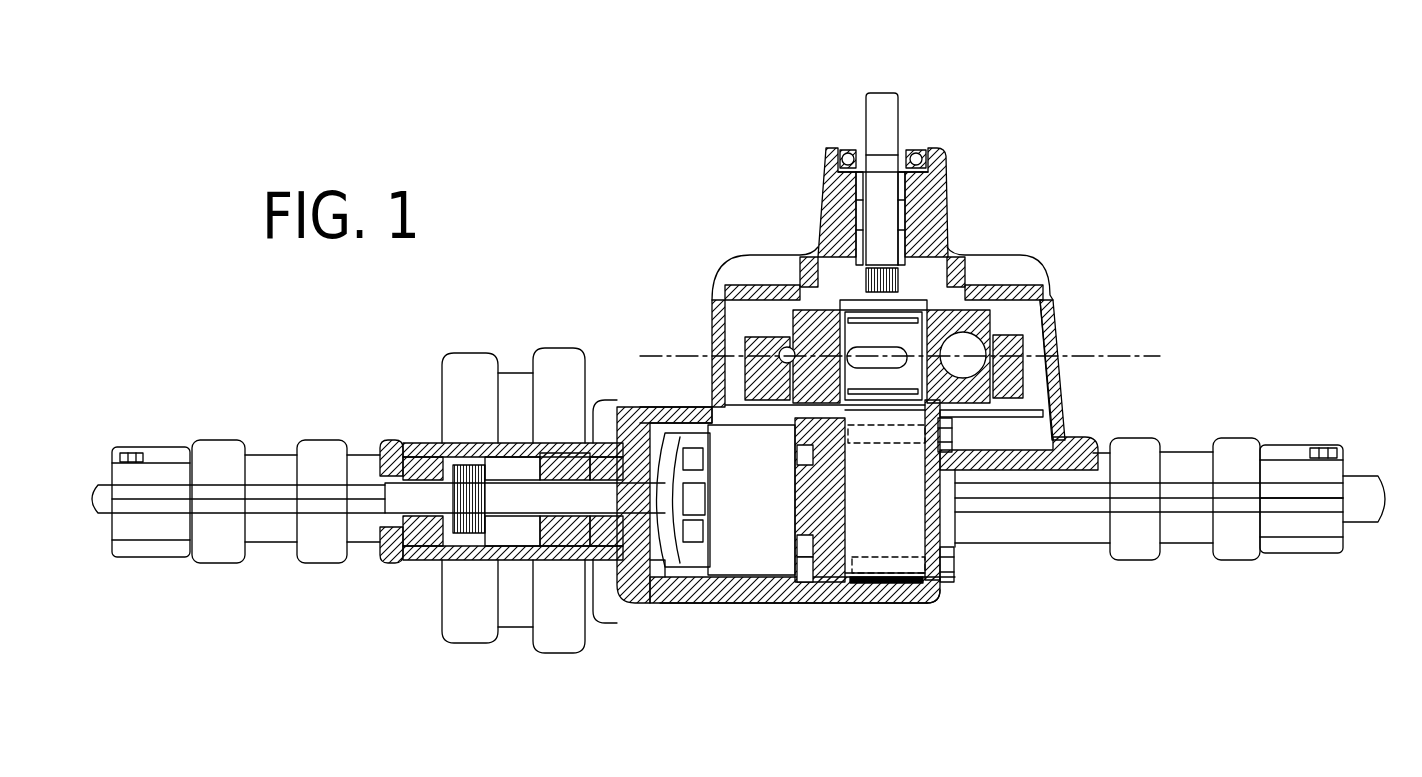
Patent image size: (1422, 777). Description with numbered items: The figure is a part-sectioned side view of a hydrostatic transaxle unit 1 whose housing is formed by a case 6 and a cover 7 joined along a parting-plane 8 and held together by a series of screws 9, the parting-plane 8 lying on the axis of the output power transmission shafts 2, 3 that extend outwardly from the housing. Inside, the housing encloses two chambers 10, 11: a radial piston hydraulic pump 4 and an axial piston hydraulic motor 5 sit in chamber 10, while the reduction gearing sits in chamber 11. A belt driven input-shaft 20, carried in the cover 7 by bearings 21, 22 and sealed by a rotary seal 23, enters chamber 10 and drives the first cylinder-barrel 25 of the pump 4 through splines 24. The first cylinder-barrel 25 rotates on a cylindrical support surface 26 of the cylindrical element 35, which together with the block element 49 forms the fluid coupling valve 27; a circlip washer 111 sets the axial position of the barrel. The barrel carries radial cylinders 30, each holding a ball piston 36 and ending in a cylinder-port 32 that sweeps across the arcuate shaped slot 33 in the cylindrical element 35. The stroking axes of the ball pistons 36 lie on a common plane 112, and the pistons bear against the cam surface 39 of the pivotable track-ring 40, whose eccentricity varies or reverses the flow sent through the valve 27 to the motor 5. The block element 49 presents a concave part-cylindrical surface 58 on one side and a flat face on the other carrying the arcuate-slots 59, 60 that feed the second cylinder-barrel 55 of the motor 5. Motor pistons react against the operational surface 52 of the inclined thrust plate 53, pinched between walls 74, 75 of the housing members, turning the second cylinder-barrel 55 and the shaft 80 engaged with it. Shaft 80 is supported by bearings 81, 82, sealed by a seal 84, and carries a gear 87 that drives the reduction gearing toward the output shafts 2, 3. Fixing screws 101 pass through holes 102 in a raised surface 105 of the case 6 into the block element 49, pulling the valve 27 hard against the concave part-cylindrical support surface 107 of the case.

The hydrostatic transaxle unit 1 is at (1068, 108).
The output power transmission shaft 2 is at (1358, 490).
The output power transmission shaft 3 is at (105, 507).
The radial piston hydraulic pump 4 is at (1067, 308).
The axial piston hydraulic motor 5 is at (742, 625).
The case 6 is at (1223, 553).
The cover 7 is at (1223, 478).
The parting-plane 8 is at (1307, 503).
The screws 9 is at (134, 450).
The chamber 10 is at (1047, 294).
The chamber 11 is at (510, 468).
The input-shaft 20 is at (876, 104).
The bearing 21 is at (855, 190).
The bearing 22 is at (851, 222).
The rotary seal 23 is at (850, 146).
The splines 24 is at (822, 256).
The first cylinder-barrel 25 is at (810, 333).
The cylindrical support surface 26 is at (930, 298).
The fluid coupling valve 27 is at (980, 587).
The cylinders 30 is at (1010, 313).
The cylinder-port 32 is at (953, 340).
The arcuate shaped slot 33 is at (840, 350).
The cylindrical element 35 is at (866, 478).
The ball piston 36 is at (965, 368).
The cam surface 39 is at (755, 388).
The track-ring 40 is at (700, 395).
The block element 49 is at (842, 565).
The operational surface 52 is at (650, 540).
The thrust plate 53 is at (658, 497).
The second cylinder-barrel 55 is at (740, 513).
The concave part-cylindrical surface 58 is at (857, 492).
The arcuate-slot 59 is at (807, 560).
The arcuate-slot 60 is at (797, 456).
The wall 74 is at (670, 577).
The wall 75 is at (683, 468).
The shaft 80 is at (527, 503).
The bearing 81 is at (570, 463).
The bearing 82 is at (400, 443).
The seal 84 is at (392, 540).
The gear 87 is at (463, 470).
The fixing screws 101 is at (955, 434).
The holes 102 is at (1065, 445).
The raised surface 105 is at (968, 412).
The concave part-cylindrical support surface 107 is at (912, 528).
The circlip washer 111 is at (830, 418).
The common plane 112 is at (1153, 355).